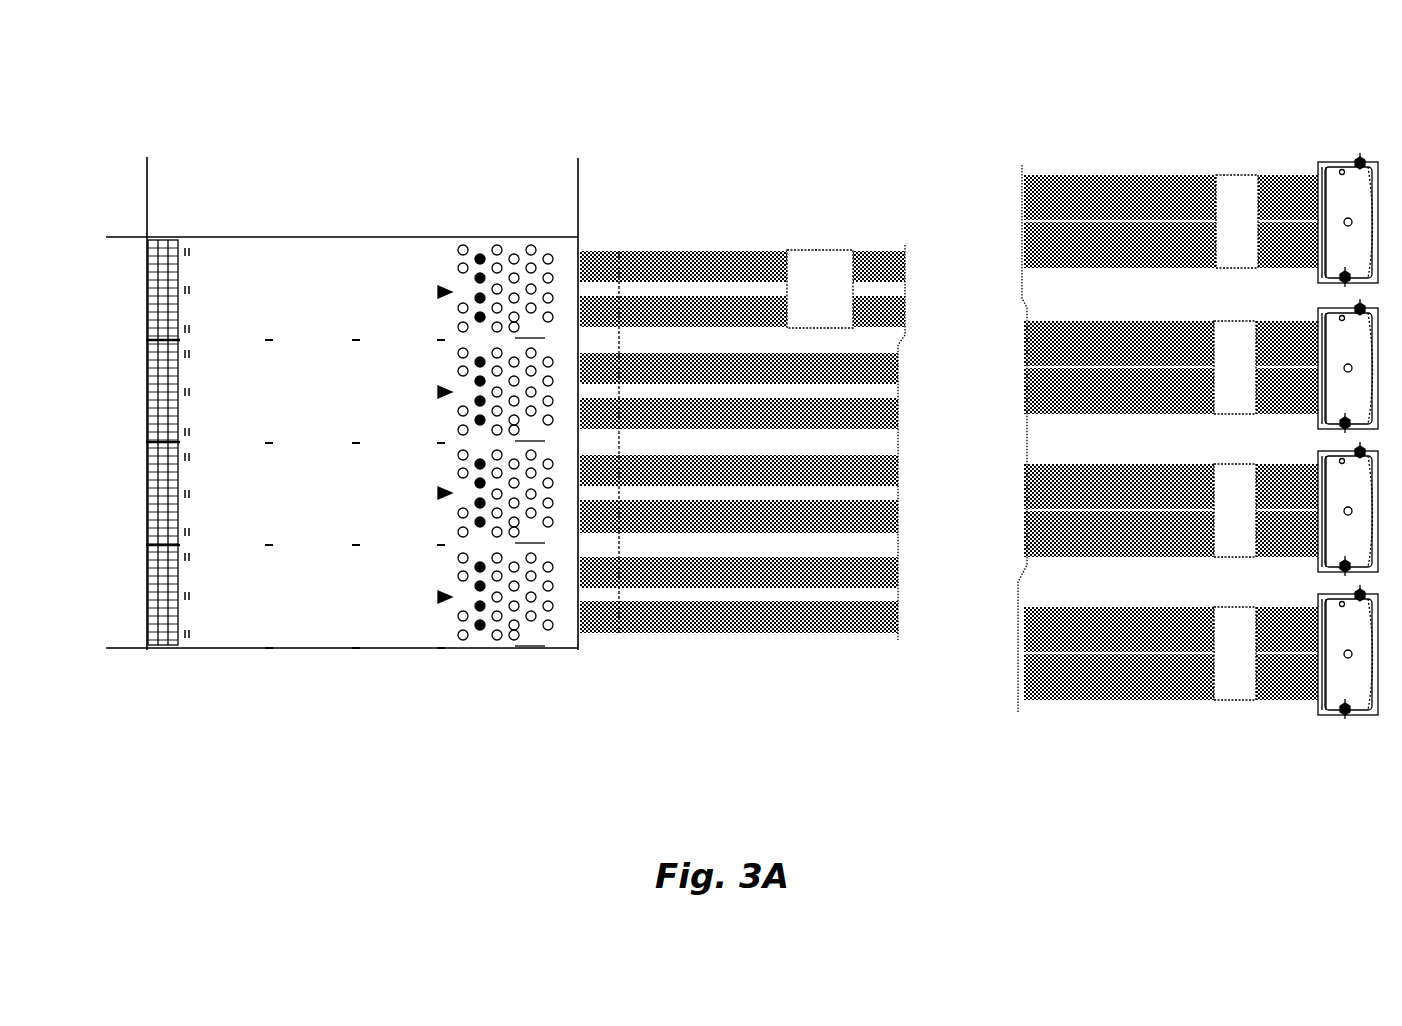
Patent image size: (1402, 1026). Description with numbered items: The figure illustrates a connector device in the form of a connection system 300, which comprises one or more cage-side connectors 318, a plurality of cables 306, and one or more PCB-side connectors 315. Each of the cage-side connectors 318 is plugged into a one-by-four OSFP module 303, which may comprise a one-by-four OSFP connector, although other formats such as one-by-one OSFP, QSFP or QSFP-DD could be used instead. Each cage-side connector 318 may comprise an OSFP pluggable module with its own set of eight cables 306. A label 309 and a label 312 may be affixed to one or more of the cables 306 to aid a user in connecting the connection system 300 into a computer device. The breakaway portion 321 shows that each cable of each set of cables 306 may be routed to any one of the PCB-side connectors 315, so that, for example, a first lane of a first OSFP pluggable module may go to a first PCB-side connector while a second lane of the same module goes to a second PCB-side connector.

The connection system 300 is at (1071, 65).
The one-by-four OSFP module 303 is at (285, 237).
The cables 306 is at (658, 250).
The label 309 is at (800, 250).
The label 312 is at (1253, 177).
The PCB-side connectors 315 is at (1360, 163).
The cage-side connectors 318 is at (436, 296).
The breakaway portion 321 is at (955, 497).